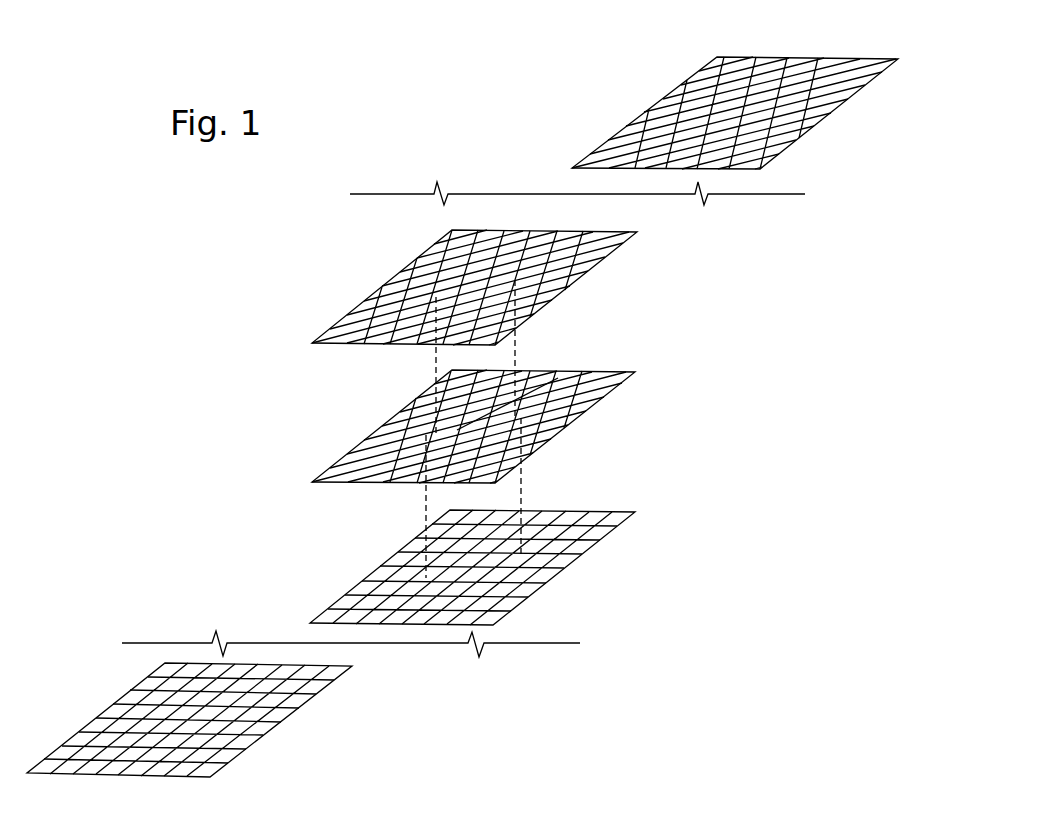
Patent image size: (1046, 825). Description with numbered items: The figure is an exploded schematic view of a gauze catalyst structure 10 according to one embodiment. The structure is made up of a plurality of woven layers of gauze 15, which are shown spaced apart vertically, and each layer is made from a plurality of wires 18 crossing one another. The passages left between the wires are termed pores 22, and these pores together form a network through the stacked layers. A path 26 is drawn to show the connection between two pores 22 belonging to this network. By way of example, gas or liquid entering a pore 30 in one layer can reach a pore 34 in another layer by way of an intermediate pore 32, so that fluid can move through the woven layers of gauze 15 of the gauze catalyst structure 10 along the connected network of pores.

The gauze catalyst structure 10 is at (560, 114).
The woven layer of gauze 15 is at (352, 310).
The wires 18 is at (425, 262).
The pore 30 is at (428, 300).
The pores 22 is at (437, 433).
The pore 32 is at (577, 370).
The path 26 is at (522, 483).
The pore 34 is at (423, 578).